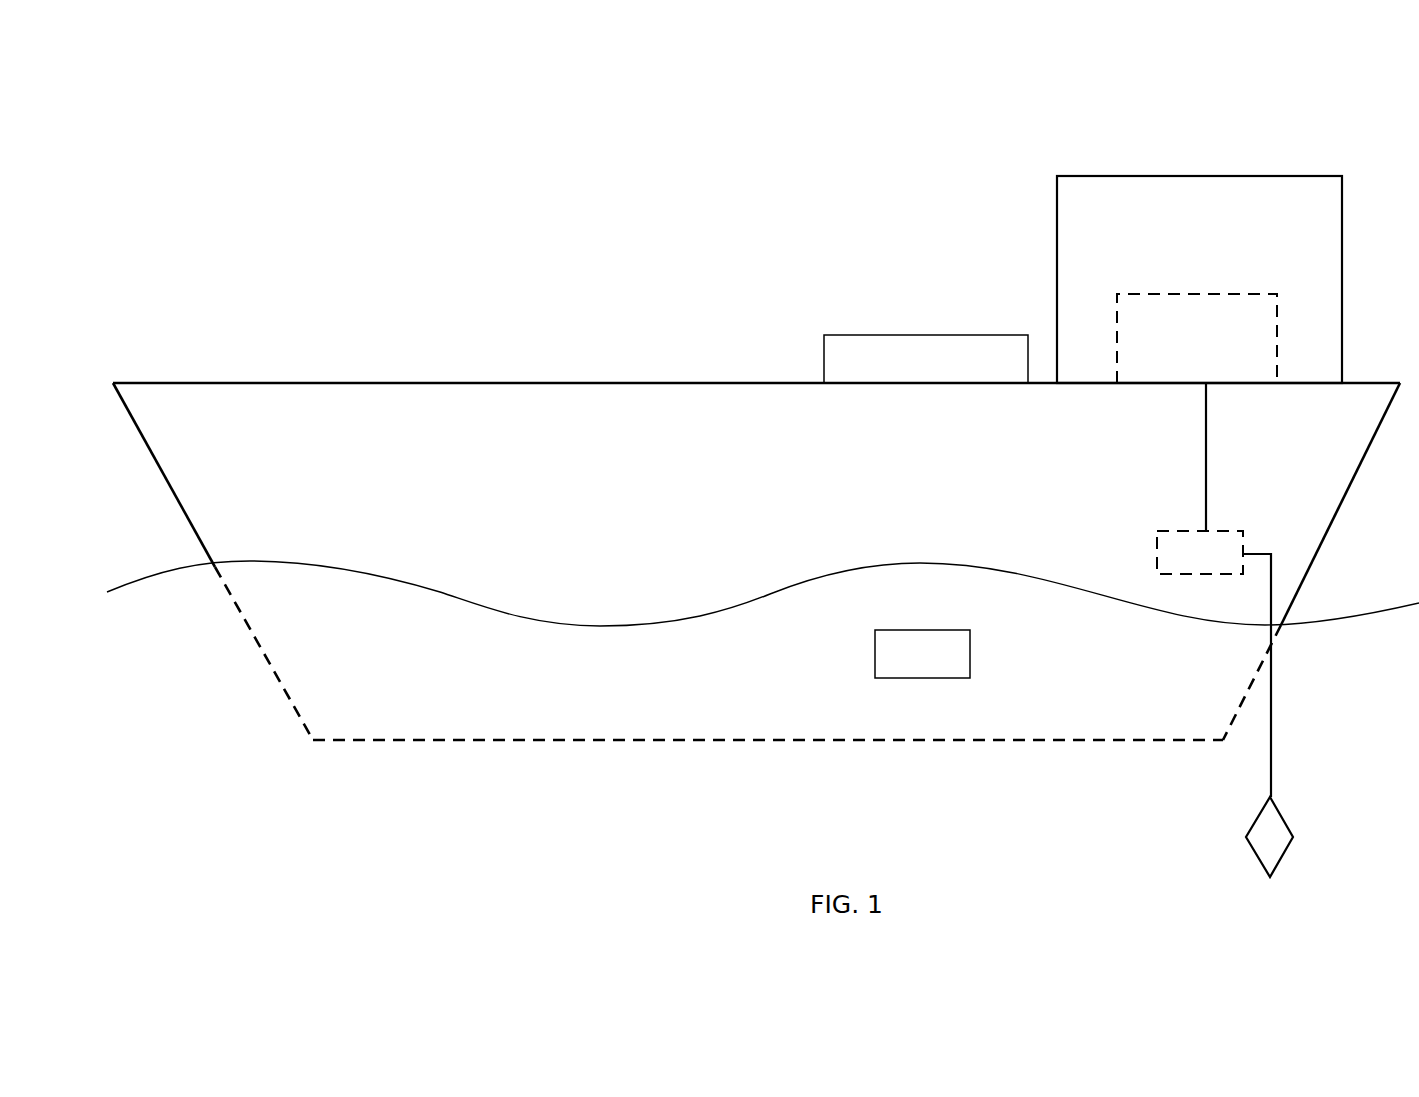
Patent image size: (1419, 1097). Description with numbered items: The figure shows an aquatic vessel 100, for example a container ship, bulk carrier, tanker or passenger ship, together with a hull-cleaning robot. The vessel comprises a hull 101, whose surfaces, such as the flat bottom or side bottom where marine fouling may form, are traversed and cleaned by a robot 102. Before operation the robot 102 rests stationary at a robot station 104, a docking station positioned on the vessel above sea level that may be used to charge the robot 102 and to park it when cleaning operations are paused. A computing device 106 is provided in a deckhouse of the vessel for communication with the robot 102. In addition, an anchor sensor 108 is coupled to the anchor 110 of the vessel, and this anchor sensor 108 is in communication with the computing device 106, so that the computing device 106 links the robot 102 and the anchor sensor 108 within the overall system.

The aquatic vessel 100 is at (182, 148).
The hull 101 is at (784, 517).
The robot 102 is at (923, 678).
The robot station 104 is at (926, 335).
The computing device 106 is at (1193, 294).
The anchor sensor 108 is at (1177, 531).
The anchor 110 is at (1285, 856).